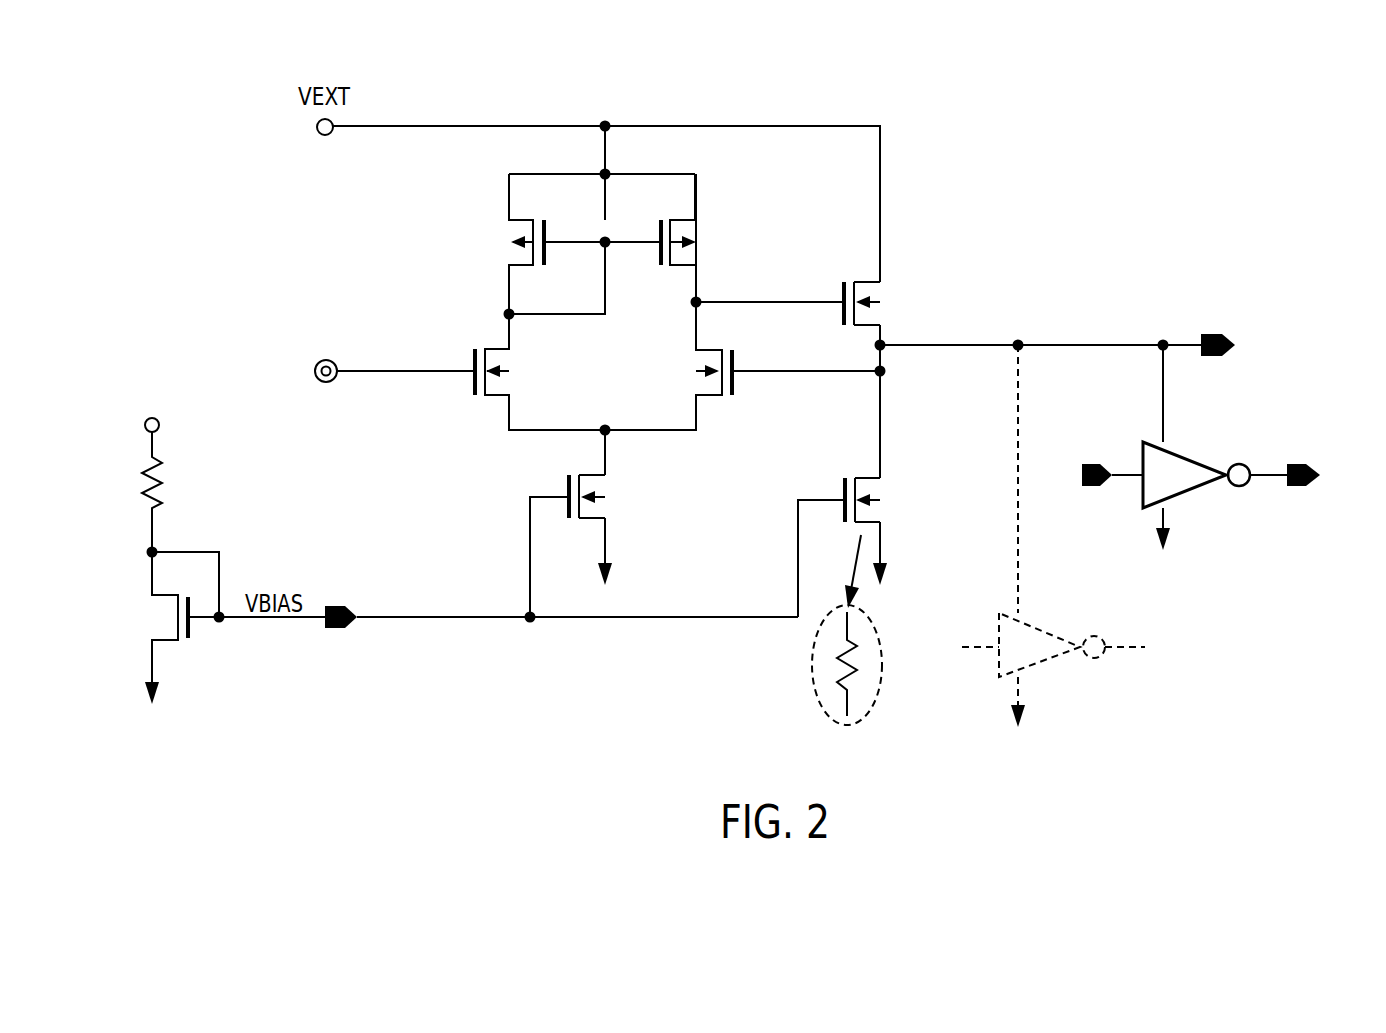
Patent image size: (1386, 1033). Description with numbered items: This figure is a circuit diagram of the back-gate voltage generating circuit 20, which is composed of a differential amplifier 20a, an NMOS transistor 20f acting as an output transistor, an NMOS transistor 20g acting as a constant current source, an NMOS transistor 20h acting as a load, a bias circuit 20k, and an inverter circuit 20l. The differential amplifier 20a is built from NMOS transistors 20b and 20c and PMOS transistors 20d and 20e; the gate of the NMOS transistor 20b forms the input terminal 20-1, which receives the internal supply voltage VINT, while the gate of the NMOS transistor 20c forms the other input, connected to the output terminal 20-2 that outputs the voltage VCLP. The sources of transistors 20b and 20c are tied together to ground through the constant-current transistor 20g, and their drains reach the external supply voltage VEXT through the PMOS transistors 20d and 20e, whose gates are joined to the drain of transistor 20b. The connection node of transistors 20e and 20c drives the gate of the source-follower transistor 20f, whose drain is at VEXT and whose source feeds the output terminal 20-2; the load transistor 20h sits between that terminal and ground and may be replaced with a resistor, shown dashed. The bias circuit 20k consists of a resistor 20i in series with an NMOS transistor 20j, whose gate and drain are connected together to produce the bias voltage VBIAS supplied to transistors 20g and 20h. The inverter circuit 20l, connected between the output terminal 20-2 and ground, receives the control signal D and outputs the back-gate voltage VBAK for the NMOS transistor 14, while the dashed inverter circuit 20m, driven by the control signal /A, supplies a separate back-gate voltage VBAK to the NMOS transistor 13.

The back-gate voltage generating circuit 20 is at (1006, 192).
The input terminal 20-1 is at (311, 371).
The output terminal 20-2 is at (1215, 333).
The differential amplifier 20a is at (623, 383).
The NMOS transistor 20b is at (472, 388).
The NMOS transistor 20c is at (705, 396).
The PMOS transistor 20d is at (505, 235).
The PMOS transistor 20e is at (700, 236).
The NMOS transistor 20f is at (883, 298).
The NMOS transistor 20g is at (600, 490).
The NMOS transistor 20h is at (858, 474).
The resistor 20i is at (163, 470).
The NMOS transistor 20j is at (165, 641).
The bias circuit 20k is at (233, 544).
The inverter circuit 20l is at (1190, 454).
The inverter circuit 20m is at (1043, 633).
The NMOS transistor 13 is at (1173, 648).
The NMOS transistor 14 is at (1336, 497).